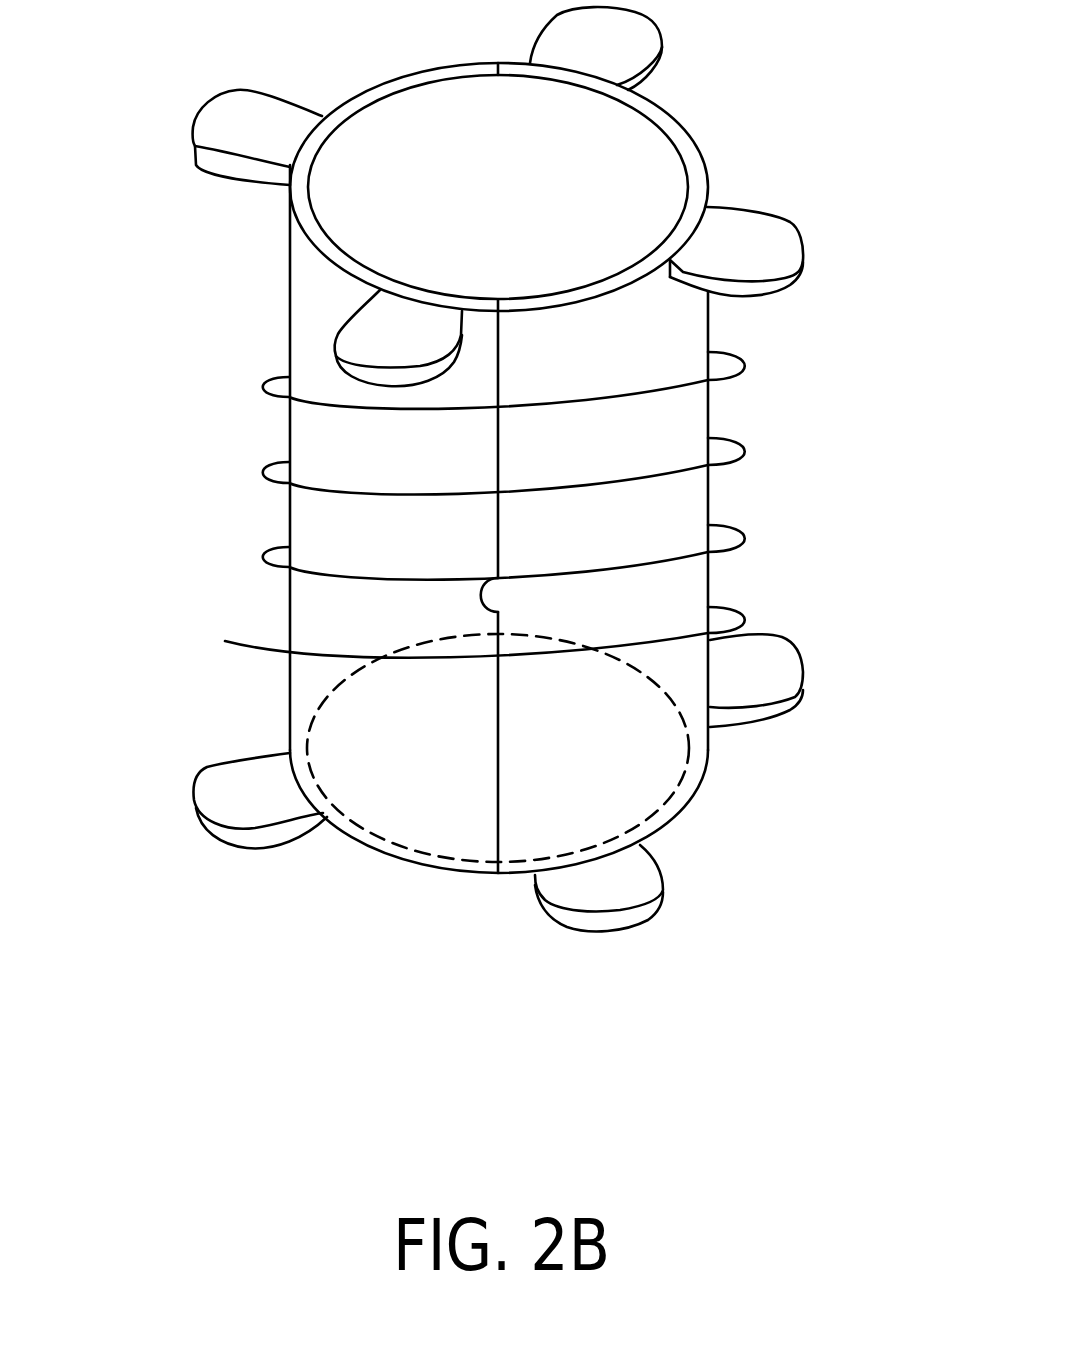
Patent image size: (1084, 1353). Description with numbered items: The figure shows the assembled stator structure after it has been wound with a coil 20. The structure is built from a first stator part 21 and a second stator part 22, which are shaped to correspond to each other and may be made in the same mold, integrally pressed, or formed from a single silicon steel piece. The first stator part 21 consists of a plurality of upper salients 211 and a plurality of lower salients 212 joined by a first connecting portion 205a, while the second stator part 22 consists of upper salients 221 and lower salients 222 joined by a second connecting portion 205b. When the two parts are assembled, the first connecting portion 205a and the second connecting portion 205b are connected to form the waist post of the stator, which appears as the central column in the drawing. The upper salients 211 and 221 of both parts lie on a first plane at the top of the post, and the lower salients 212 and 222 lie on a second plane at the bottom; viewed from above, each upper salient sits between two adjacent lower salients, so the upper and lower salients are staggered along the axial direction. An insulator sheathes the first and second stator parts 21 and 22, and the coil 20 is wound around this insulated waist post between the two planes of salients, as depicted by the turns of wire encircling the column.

The coil 20 is at (289, 337).
The first connecting portion 205a is at (683, 410).
The second connecting portion 205b is at (323, 432).
The first stator part 21 is at (742, 599).
The upper salients 211 is at (785, 235).
The lower salients 212 is at (638, 917).
The second stator part 22 is at (200, 464).
The upper salients 221 is at (213, 122).
The lower salients 222 is at (210, 788).